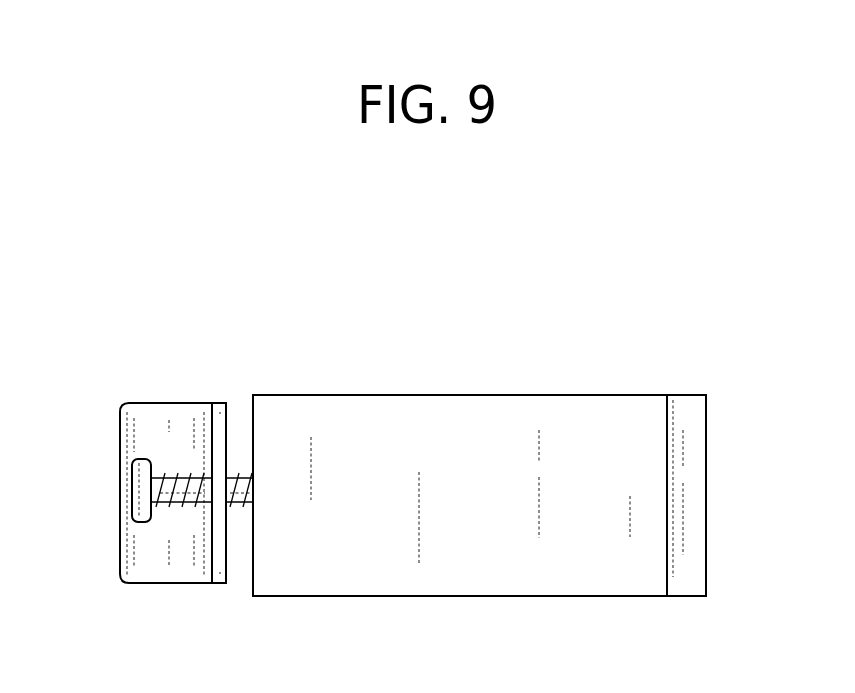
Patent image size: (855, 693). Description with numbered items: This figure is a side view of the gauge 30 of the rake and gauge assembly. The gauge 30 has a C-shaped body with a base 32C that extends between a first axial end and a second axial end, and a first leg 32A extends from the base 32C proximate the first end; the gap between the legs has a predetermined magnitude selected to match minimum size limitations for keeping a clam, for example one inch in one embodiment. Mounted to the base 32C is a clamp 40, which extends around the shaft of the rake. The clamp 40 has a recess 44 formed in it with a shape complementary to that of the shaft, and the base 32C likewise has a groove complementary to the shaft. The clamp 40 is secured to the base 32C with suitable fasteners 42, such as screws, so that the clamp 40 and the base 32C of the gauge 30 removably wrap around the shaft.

The gauge 30 is at (680, 324).
The first leg 32A is at (544, 560).
The base 32C is at (706, 489).
The clamp 40 is at (226, 430).
The fasteners 42 is at (131, 492).
The recess 44 is at (168, 545).